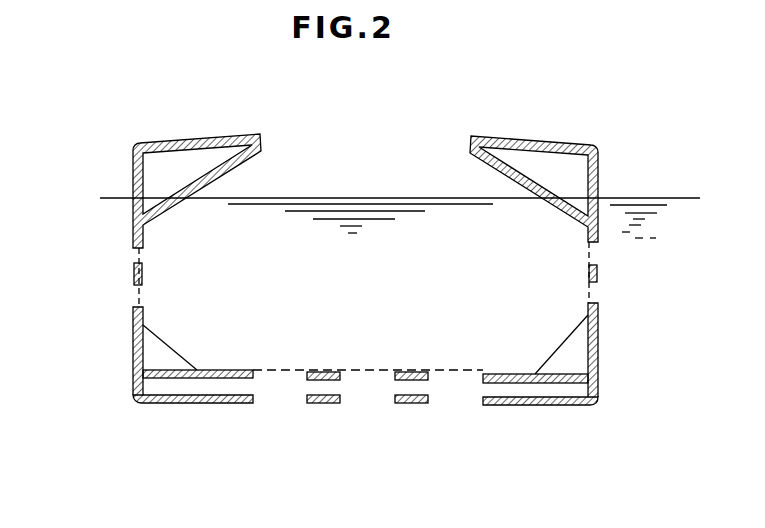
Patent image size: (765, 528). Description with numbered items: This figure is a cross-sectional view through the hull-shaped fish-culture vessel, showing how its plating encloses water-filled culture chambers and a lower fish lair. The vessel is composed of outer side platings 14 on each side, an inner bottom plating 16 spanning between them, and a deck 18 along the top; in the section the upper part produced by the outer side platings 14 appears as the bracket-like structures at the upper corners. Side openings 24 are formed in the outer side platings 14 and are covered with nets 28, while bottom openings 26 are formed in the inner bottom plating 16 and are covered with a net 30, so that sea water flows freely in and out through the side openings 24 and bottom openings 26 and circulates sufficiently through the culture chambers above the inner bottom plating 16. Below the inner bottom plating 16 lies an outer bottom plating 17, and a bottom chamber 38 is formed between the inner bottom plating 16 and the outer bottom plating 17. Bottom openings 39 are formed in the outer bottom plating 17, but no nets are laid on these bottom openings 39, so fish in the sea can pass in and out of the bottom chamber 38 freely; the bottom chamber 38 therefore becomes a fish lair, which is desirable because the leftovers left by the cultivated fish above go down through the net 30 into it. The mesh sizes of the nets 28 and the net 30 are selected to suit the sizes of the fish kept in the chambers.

The outer side platings 14 is at (598, 330).
The inner bottom plating 16 is at (510, 374).
The outer bottom plating 17 is at (512, 406).
The deck 18 is at (542, 143).
The side openings 24 is at (134, 296).
The bottom openings 26 is at (283, 376).
The nets 28 is at (139, 255).
The net 30 is at (367, 371).
The bottom chamber 38 is at (222, 385).
The bottom openings 39 is at (457, 390).